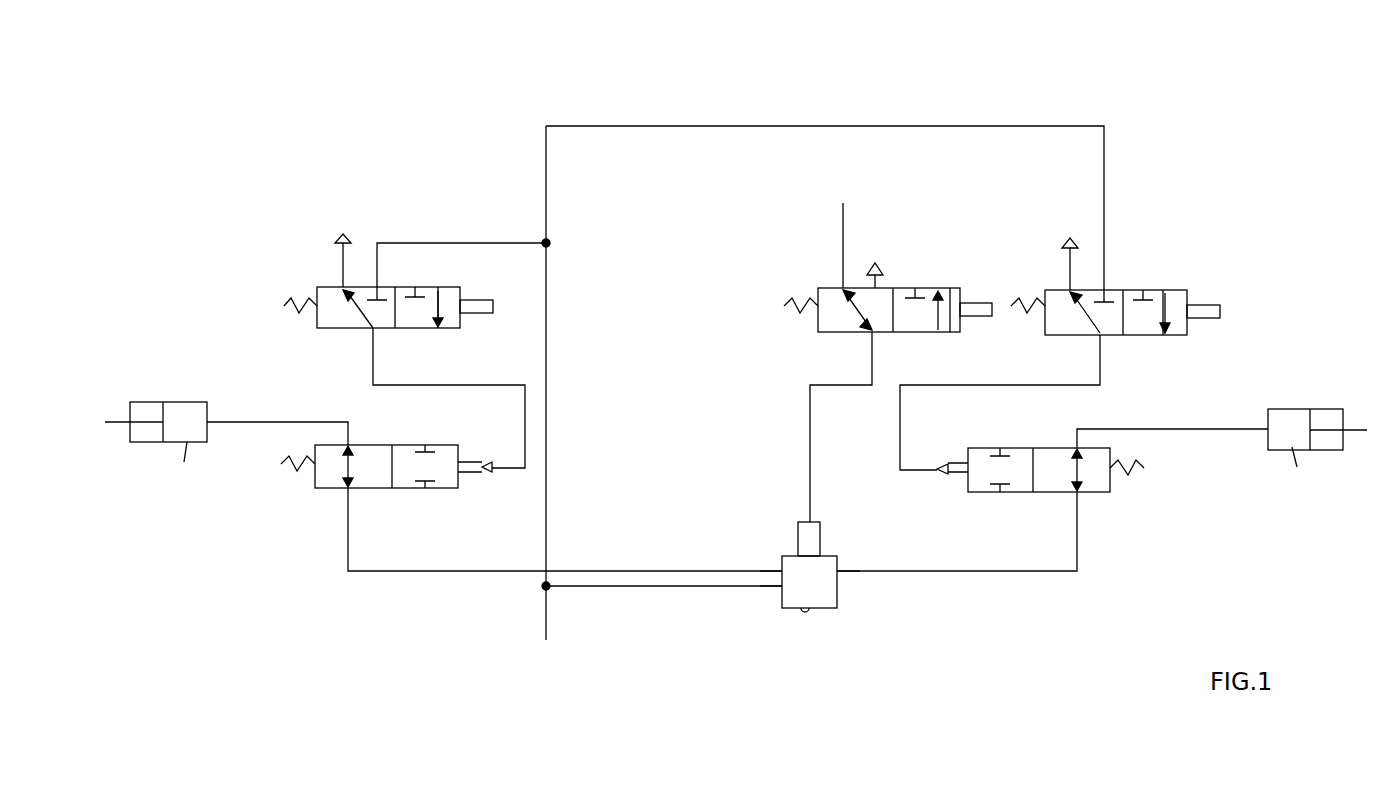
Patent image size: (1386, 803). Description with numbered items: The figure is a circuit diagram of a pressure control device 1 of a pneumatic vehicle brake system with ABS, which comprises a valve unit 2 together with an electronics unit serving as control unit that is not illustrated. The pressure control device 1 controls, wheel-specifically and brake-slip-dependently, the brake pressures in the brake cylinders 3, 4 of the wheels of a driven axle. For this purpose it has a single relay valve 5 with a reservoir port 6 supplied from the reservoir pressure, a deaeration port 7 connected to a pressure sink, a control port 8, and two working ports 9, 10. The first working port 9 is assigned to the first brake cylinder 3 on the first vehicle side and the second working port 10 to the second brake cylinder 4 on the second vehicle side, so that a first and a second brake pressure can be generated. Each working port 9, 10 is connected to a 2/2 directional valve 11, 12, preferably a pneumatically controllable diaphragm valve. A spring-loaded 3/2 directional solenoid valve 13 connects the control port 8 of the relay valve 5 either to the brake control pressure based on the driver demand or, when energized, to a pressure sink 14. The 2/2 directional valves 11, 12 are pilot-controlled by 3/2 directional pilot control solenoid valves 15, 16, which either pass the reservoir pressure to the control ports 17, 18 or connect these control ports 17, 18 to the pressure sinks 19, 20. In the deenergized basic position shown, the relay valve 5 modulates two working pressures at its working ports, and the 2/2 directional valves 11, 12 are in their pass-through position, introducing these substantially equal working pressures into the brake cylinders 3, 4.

The pressure control device 1 is at (1186, 94).
The valve unit 2 is at (490, 93).
The first brake cylinder 3 is at (1292, 412).
The second brake cylinder 4 is at (187, 408).
The relay valve 5 is at (830, 598).
The reservoir port 6 is at (781, 589).
The deaeration port 7 is at (805, 613).
The control port 8 is at (813, 520).
The first working port 9 is at (840, 568).
The second working port 10 is at (781, 569).
The 2/2 directional valve 11 is at (1050, 455).
The 2/2 directional valve 12 is at (383, 448).
The 3/2 directional solenoid valve 13 is at (838, 331).
The pressure sink 14 is at (878, 261).
The 3/2 directional pilot control solenoid valve 15 is at (1152, 298).
The 3/2 directional pilot control solenoid valve 16 is at (322, 292).
The control port 17 is at (937, 465).
The control port 18 is at (487, 462).
The pressure sink 19 is at (1066, 241).
The pressure sink 20 is at (345, 232).